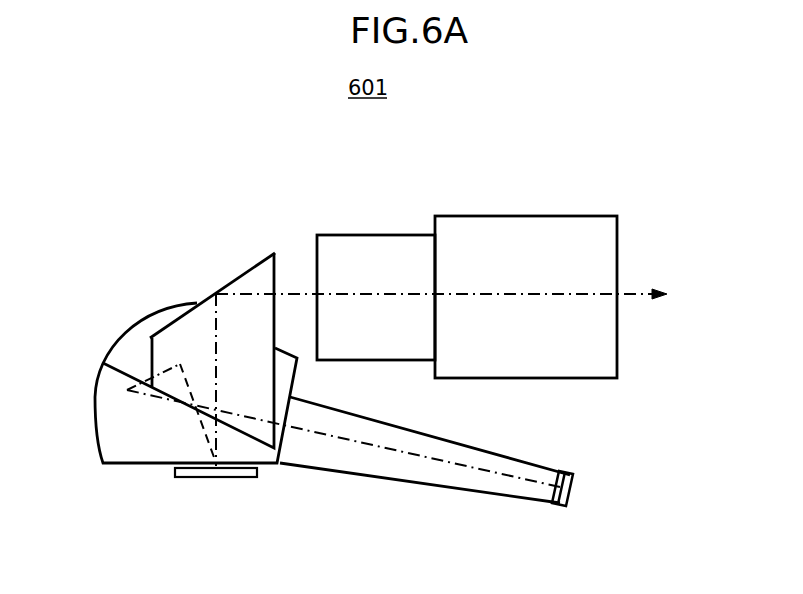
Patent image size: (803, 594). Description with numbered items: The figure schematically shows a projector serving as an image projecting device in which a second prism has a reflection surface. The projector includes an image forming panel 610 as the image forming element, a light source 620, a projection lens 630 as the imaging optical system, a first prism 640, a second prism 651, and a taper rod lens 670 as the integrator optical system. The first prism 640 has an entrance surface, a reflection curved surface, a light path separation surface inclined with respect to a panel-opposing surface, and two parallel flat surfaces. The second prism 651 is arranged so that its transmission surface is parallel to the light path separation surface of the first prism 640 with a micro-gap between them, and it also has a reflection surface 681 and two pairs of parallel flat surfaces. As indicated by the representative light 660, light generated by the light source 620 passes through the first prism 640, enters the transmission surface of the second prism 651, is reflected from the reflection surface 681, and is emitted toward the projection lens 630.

The image forming panel 610 is at (197, 477).
The light source 620 is at (572, 493).
The projection lens 630 is at (523, 213).
The first prism 640 is at (127, 337).
The second prism 651 is at (258, 275).
The representative light 660 is at (638, 297).
The taper rod lens 670 is at (362, 468).
The reflection surface 681 is at (203, 303).